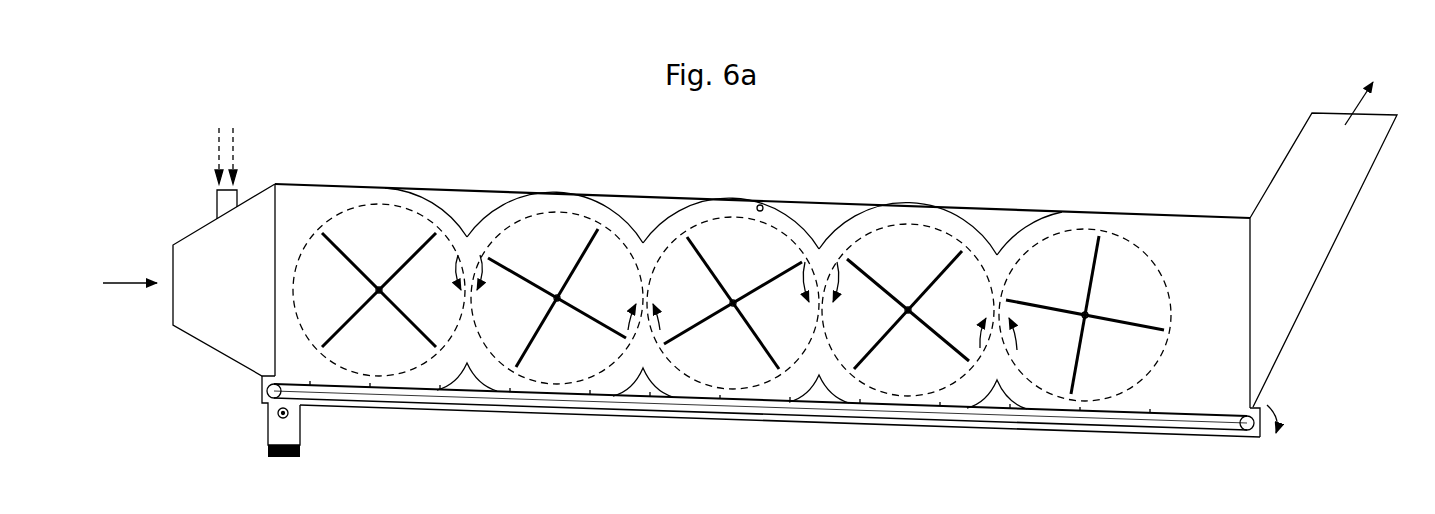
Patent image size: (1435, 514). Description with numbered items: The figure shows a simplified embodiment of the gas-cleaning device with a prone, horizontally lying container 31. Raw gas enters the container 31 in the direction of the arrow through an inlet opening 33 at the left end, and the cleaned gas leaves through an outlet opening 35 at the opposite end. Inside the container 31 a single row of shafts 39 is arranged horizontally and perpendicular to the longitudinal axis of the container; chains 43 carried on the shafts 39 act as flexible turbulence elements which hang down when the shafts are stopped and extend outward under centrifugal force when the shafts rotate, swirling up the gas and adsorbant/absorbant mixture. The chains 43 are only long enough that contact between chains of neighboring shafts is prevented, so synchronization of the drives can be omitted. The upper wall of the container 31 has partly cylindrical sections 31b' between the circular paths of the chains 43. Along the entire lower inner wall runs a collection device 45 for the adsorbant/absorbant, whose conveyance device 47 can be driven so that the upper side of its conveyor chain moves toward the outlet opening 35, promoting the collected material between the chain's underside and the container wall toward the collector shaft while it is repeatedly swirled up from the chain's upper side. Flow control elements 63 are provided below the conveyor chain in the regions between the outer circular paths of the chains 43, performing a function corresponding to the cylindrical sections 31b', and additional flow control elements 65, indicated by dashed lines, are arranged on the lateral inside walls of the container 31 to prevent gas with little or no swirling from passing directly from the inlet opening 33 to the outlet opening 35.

The container 31 is at (978, 206).
The partly cylindrical sections 31b' is at (786, 177).
The inlet opening 33 is at (190, 277).
The outlet opening 35 is at (1303, 163).
The shafts 39 is at (380, 294).
The chains 43 is at (536, 336).
The collection device 45 is at (330, 428).
The conveyance device 47 is at (1172, 435).
The flow control elements 63 is at (478, 387).
The additional flow control elements 65 is at (368, 204).